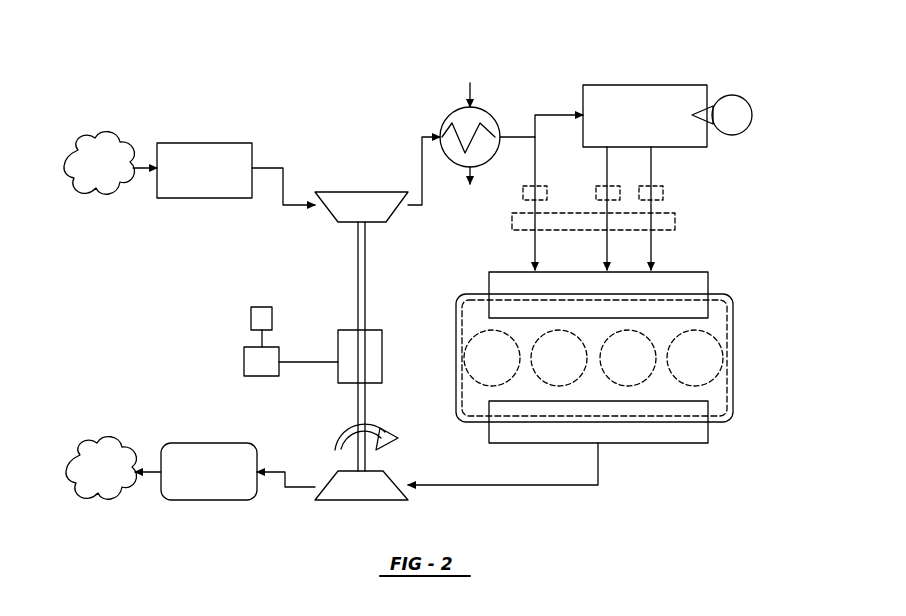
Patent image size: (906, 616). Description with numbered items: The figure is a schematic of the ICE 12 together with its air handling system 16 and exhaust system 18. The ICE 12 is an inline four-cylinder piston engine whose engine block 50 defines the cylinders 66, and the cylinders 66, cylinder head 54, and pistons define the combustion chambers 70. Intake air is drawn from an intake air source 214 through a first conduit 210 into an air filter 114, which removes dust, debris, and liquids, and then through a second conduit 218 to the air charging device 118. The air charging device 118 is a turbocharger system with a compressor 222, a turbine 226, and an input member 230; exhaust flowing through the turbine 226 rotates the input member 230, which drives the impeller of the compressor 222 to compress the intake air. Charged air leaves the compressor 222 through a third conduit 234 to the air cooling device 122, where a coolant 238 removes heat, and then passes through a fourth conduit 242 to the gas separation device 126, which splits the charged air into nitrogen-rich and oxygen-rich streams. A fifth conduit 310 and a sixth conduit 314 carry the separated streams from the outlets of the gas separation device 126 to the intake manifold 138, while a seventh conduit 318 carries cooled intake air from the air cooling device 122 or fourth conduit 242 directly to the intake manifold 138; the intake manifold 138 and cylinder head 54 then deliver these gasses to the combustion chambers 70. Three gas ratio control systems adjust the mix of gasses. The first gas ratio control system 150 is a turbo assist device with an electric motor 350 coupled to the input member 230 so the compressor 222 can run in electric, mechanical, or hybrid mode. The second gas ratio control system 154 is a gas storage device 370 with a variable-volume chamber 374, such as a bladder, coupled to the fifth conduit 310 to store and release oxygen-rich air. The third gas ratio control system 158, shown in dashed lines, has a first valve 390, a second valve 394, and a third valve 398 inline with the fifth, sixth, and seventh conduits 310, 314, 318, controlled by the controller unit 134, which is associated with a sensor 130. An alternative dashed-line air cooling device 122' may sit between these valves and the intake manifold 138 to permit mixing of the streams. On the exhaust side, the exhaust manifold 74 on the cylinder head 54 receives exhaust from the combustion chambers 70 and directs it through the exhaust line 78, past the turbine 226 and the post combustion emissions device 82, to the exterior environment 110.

The ICE 12 is at (740, 312).
The air handling system 16 is at (426, 112).
The exhaust system 18 is at (592, 502).
The engine block 50 is at (720, 443).
The cylinder head 54 is at (733, 410).
The cylinder 66 is at (472, 376).
The combustion chamber 70 is at (490, 370).
The exhaust manifold 74 is at (645, 444).
The exhaust line 78 is at (494, 486).
The post combustion emissions device 82 is at (210, 500).
The exterior environment 110 is at (90, 505).
The air filter 114 is at (213, 143).
The air charging device 118 is at (325, 256).
The air cooling device 122 is at (478, 105).
The air cooling device 122' is at (633, 212).
The gas separation device 126 is at (665, 85).
The sensor 130 is at (251, 318).
The controller unit 134 is at (244, 356).
The intake manifold 138 is at (708, 278).
The first gas ratio control system 150 is at (330, 388).
The second gas ratio control system 154 is at (716, 95).
The third gas ratio control system 158 is at (674, 195).
The first conduit 210 is at (145, 172).
The intake air source 214 is at (97, 135).
The second conduit 218 is at (272, 168).
The compressor 222 is at (362, 192).
The turbine 226 is at (352, 500).
The input member 230 is at (357, 283).
The third conduit 234 is at (422, 200).
The coolant 238 is at (468, 86).
The fourth conduit 242 is at (552, 114).
The fifth conduit 310 is at (651, 250).
The sixth conduit 314 is at (607, 248).
The seventh conduit 318 is at (535, 248).
The electric motor 350 is at (338, 342).
The gas storage device 370 is at (721, 98).
The chamber 374 is at (735, 108).
The first valve 390 is at (661, 190).
The second valve 394 is at (596, 192).
The third valve 398 is at (523, 192).